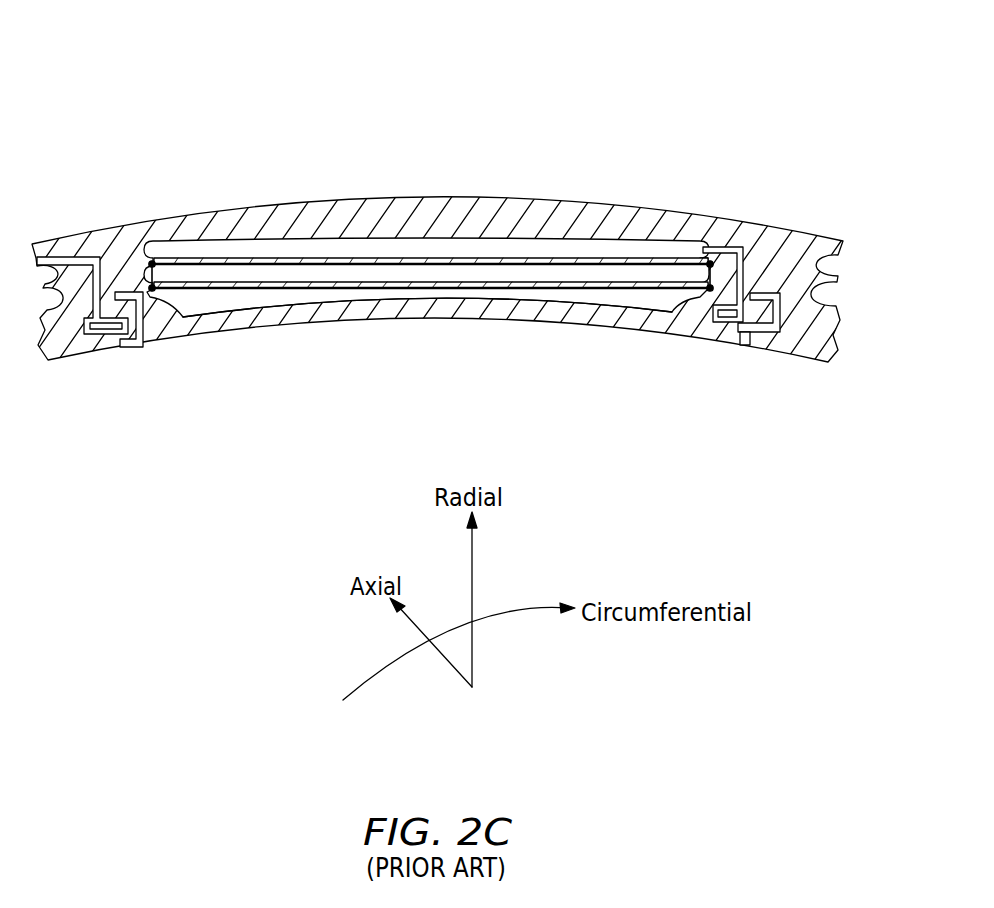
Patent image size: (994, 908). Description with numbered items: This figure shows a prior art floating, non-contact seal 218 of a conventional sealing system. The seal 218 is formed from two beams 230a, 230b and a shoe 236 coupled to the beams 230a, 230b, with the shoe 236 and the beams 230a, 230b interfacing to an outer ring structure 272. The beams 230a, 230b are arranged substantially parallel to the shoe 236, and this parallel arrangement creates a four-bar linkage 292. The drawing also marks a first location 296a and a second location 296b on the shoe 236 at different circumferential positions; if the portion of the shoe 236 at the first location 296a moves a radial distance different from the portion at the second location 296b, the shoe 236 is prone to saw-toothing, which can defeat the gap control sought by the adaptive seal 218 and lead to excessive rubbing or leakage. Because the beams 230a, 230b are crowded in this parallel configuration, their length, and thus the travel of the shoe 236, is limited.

The floating, non-contact seal 218 is at (482, 213).
The outer ring structure 272 is at (465, 197).
The four-bar linkage 292 is at (268, 260).
The beam 230a is at (535, 258).
The beam 230b is at (572, 282).
The shoe 236 is at (383, 312).
The first location 296a is at (157, 322).
The second location 296b is at (710, 323).